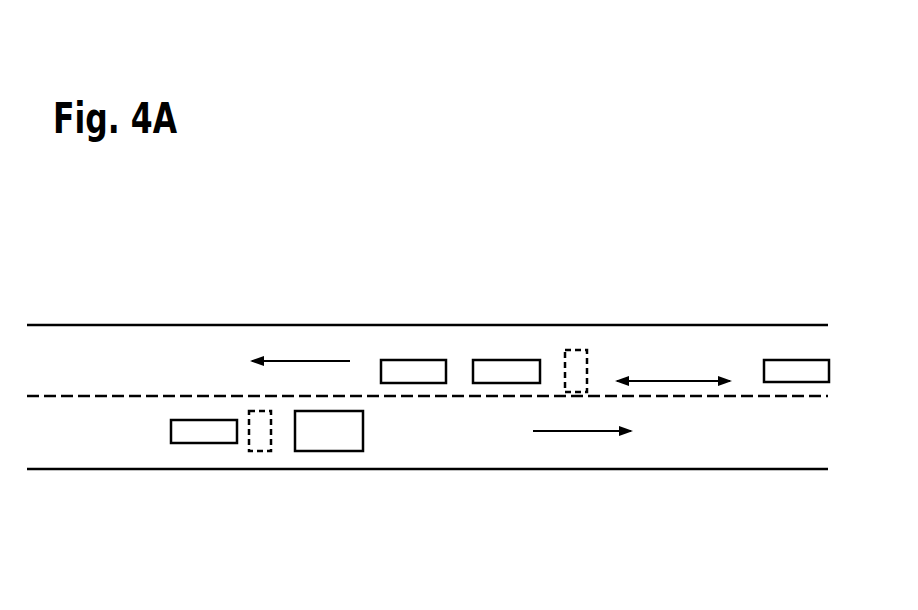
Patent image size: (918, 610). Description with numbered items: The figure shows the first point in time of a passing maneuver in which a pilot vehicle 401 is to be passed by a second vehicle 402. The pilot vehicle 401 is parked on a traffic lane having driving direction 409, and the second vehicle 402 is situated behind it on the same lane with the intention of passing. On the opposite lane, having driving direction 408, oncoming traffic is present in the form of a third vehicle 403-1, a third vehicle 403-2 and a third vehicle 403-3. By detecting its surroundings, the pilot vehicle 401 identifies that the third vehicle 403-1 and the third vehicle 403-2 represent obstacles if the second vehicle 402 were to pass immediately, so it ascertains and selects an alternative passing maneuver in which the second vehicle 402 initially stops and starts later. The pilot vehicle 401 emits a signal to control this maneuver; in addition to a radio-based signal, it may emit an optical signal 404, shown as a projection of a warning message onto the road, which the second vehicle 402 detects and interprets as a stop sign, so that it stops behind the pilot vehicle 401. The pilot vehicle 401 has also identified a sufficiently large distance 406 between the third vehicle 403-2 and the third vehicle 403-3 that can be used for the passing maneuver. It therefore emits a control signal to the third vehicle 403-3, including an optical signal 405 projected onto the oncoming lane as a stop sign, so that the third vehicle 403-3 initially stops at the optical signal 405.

The pilot vehicle 401 is at (325, 451).
The second vehicle 402 is at (183, 443).
The third vehicle 403-1 is at (395, 360).
The third vehicle 403-2 is at (488, 360).
The third vehicle 403-3 is at (797, 360).
The optical signal 404 is at (252, 451).
The optical signal 405 is at (565, 350).
The distance 406 is at (672, 381).
The driving direction 408 is at (308, 361).
The driving direction 409 is at (573, 431).